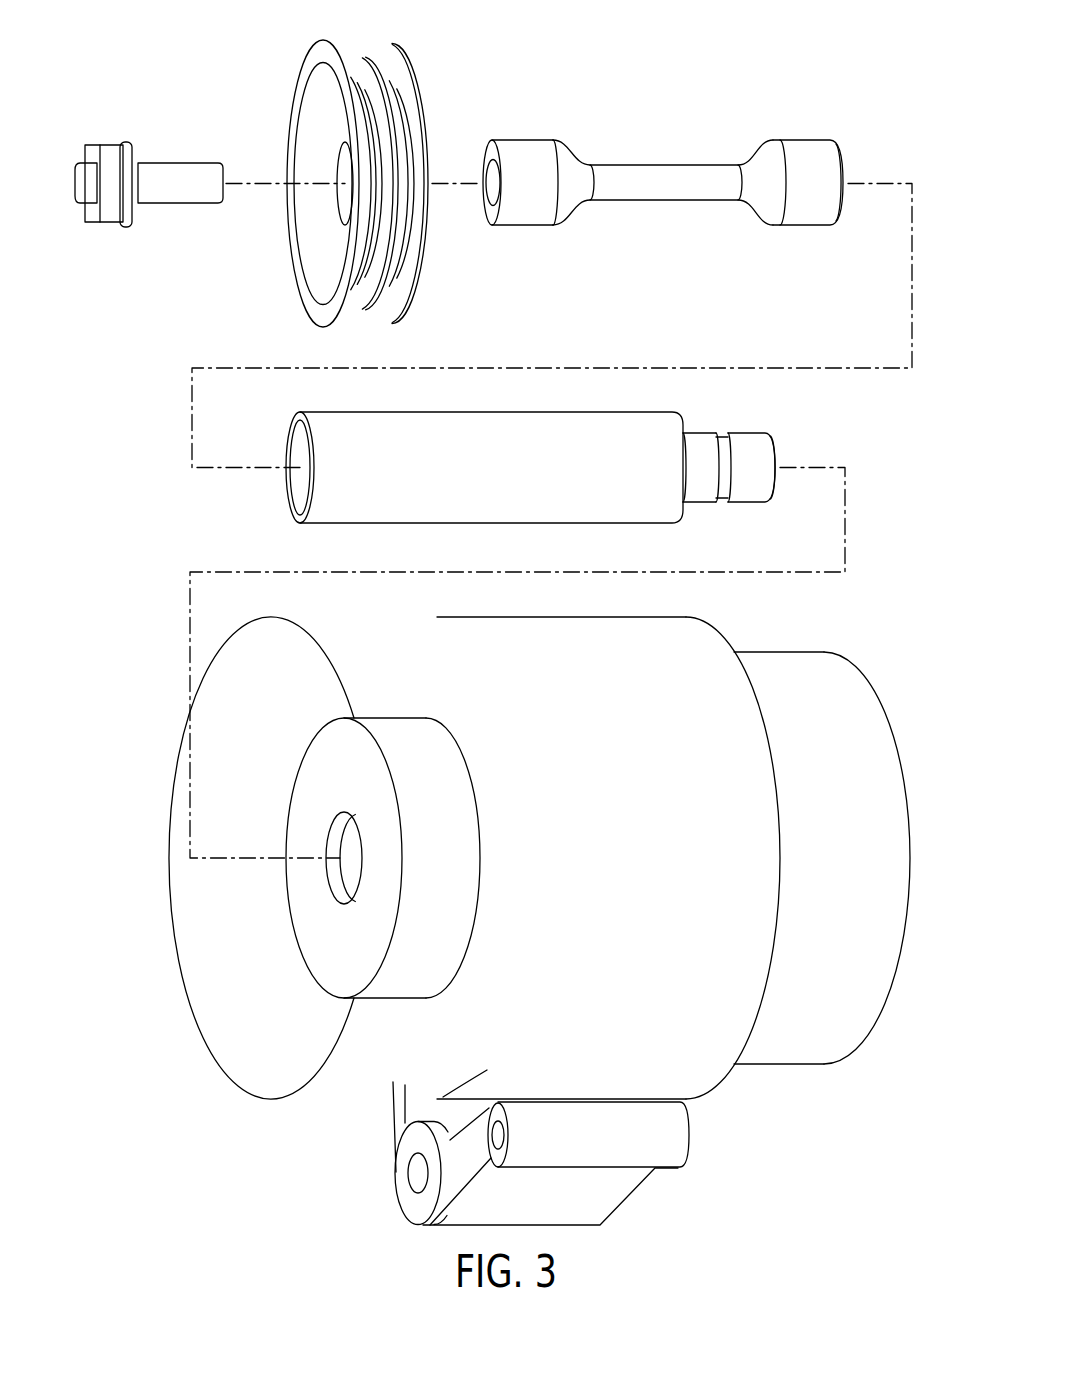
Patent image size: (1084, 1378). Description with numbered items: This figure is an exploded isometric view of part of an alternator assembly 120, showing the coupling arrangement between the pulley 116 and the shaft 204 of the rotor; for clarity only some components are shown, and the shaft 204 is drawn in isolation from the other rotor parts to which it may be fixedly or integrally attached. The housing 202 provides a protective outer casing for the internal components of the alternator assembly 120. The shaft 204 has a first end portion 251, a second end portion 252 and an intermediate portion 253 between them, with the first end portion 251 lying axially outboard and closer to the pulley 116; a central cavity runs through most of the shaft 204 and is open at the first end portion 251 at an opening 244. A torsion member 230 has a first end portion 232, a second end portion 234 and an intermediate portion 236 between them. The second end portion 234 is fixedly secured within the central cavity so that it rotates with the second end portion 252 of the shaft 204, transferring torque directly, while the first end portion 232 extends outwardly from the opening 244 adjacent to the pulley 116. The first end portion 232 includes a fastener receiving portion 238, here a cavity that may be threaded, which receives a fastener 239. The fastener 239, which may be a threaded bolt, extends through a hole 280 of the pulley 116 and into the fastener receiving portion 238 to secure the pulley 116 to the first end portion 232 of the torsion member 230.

The pulley 116 is at (322, 179).
The alternator assembly 120 is at (541, 883).
The housing 202 is at (657, 627).
The shaft 204 is at (491, 515).
The torsion member 230 is at (645, 153).
The first end portion of torsion member 232 is at (503, 141).
The second end portion of torsion member 234 is at (808, 140).
The intermediate portion of torsion member 236 is at (622, 202).
The fastener receiving portion 238 is at (483, 171).
The fastener 239 is at (108, 152).
The opening 244 is at (298, 489).
The first end portion of shaft 251 is at (306, 524).
The second end portion of shaft 252 is at (698, 503).
The intermediate portion of shaft 253 is at (533, 510).
The hole 280 is at (338, 155).